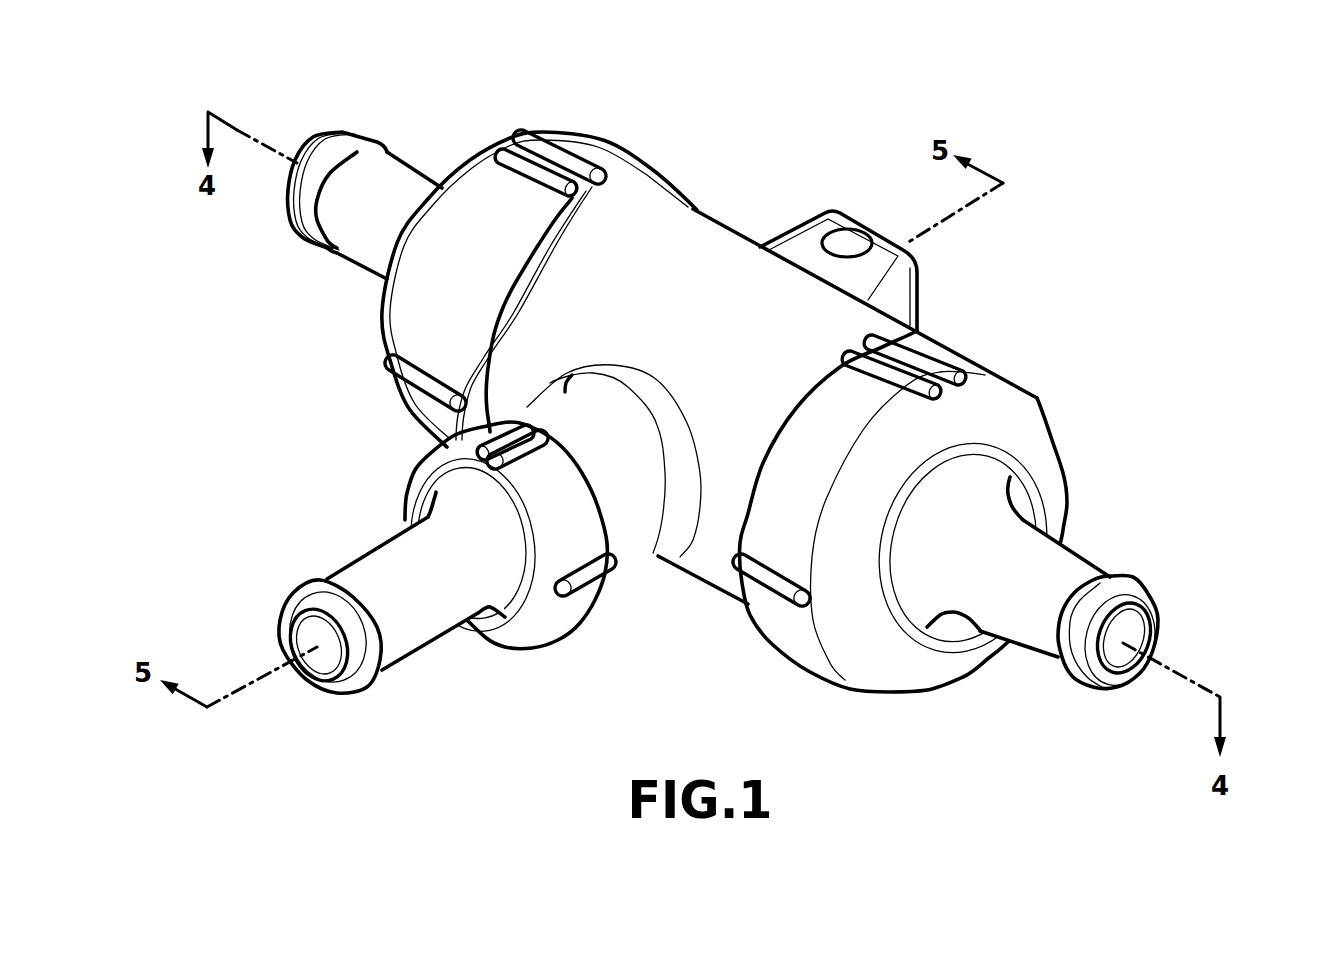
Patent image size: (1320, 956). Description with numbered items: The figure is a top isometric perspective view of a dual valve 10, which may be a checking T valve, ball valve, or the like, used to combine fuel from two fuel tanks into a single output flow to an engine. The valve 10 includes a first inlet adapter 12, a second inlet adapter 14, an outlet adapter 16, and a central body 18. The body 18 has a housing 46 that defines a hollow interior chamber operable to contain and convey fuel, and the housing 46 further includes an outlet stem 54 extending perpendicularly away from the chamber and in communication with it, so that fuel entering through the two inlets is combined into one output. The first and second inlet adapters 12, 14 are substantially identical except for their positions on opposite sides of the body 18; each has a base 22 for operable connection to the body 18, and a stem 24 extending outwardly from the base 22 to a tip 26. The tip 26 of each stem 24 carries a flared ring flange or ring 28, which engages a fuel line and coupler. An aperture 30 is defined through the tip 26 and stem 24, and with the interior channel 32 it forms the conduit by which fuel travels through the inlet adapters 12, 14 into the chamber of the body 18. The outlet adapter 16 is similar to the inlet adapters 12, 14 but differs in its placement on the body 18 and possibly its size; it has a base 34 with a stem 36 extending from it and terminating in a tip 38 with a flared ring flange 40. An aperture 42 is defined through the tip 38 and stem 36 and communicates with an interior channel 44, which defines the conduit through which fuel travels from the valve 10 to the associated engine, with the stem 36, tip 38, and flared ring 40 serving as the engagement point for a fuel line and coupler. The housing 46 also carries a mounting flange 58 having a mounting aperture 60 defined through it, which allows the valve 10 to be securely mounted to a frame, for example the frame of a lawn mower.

The valve 10 is at (1108, 166).
The first inlet adapter 12 is at (1032, 400).
The second inlet adapter 14 is at (470, 152).
The outlet adapter 16 is at (400, 470).
The body 18 is at (717, 237).
The base 22 is at (603, 157).
The stem 24 is at (398, 180).
The tip 26 is at (318, 140).
The ring 28 is at (303, 204).
The aperture 30 is at (1122, 667).
The channel 32 is at (1124, 637).
The base 34 is at (576, 607).
The stem 36 is at (390, 560).
The tip 38 is at (283, 630).
The flared ring flange 40 is at (315, 592).
The aperture 42 is at (315, 674).
The interior channel 44 is at (318, 644).
The housing 46 is at (675, 335).
The outlet stem 54 is at (633, 550).
The mounting flange 58 is at (800, 215).
The mounting aperture 60 is at (850, 238).